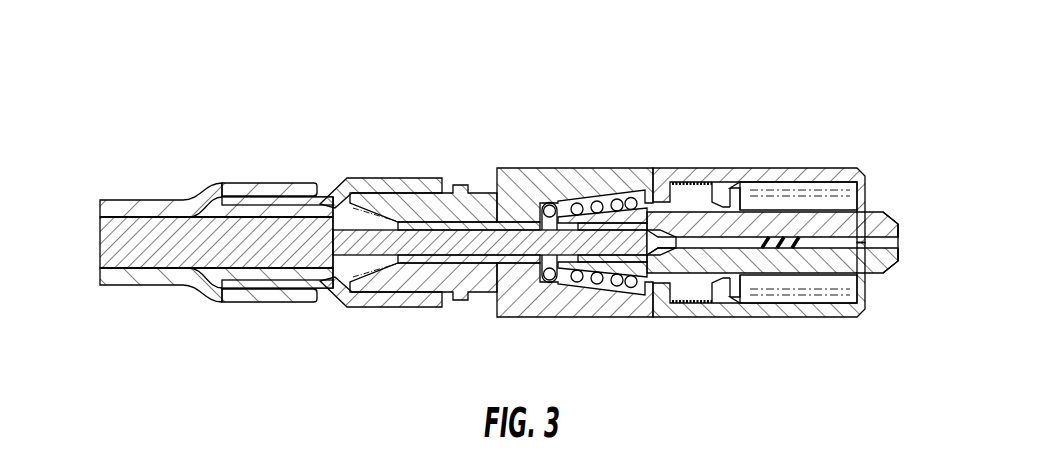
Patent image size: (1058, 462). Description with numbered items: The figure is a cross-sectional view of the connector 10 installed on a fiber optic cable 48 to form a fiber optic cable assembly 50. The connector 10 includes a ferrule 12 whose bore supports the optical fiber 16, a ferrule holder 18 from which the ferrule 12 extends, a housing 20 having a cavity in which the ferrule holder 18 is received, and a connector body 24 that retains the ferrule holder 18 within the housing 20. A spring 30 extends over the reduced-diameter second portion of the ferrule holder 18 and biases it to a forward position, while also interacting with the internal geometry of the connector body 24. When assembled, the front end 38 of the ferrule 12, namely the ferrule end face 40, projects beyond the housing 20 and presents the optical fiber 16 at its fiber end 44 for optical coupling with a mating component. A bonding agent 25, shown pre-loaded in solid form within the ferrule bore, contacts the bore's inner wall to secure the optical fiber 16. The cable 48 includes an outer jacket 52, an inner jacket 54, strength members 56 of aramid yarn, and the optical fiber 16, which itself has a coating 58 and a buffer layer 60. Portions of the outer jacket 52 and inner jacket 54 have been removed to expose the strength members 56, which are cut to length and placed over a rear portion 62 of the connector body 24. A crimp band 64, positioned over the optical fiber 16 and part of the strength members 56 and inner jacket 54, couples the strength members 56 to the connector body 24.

The connector 10 is at (634, 188).
The ferrule 12 is at (808, 210).
The optical fiber 16 is at (830, 262).
The ferrule holder 18 is at (655, 276).
The housing 20 is at (688, 166).
The connector body 24 is at (508, 168).
The bonding agent 25 is at (795, 249).
The spring 30 is at (550, 280).
The front end 38 is at (902, 227).
The ferrule end face 40 is at (926, 212).
The fiber end 44 is at (903, 250).
The fiber optic cable 48 is at (209, 240).
The fiber optic cable assembly 50 is at (85, 222).
The outer jacket 52 is at (245, 188).
The inner jacket 54 is at (233, 290).
The strength members 56 is at (333, 297).
The coating 58 is at (657, 252).
The buffer layer 60 is at (495, 256).
The rear portion 62 is at (410, 195).
The crimp band 64 is at (342, 192).